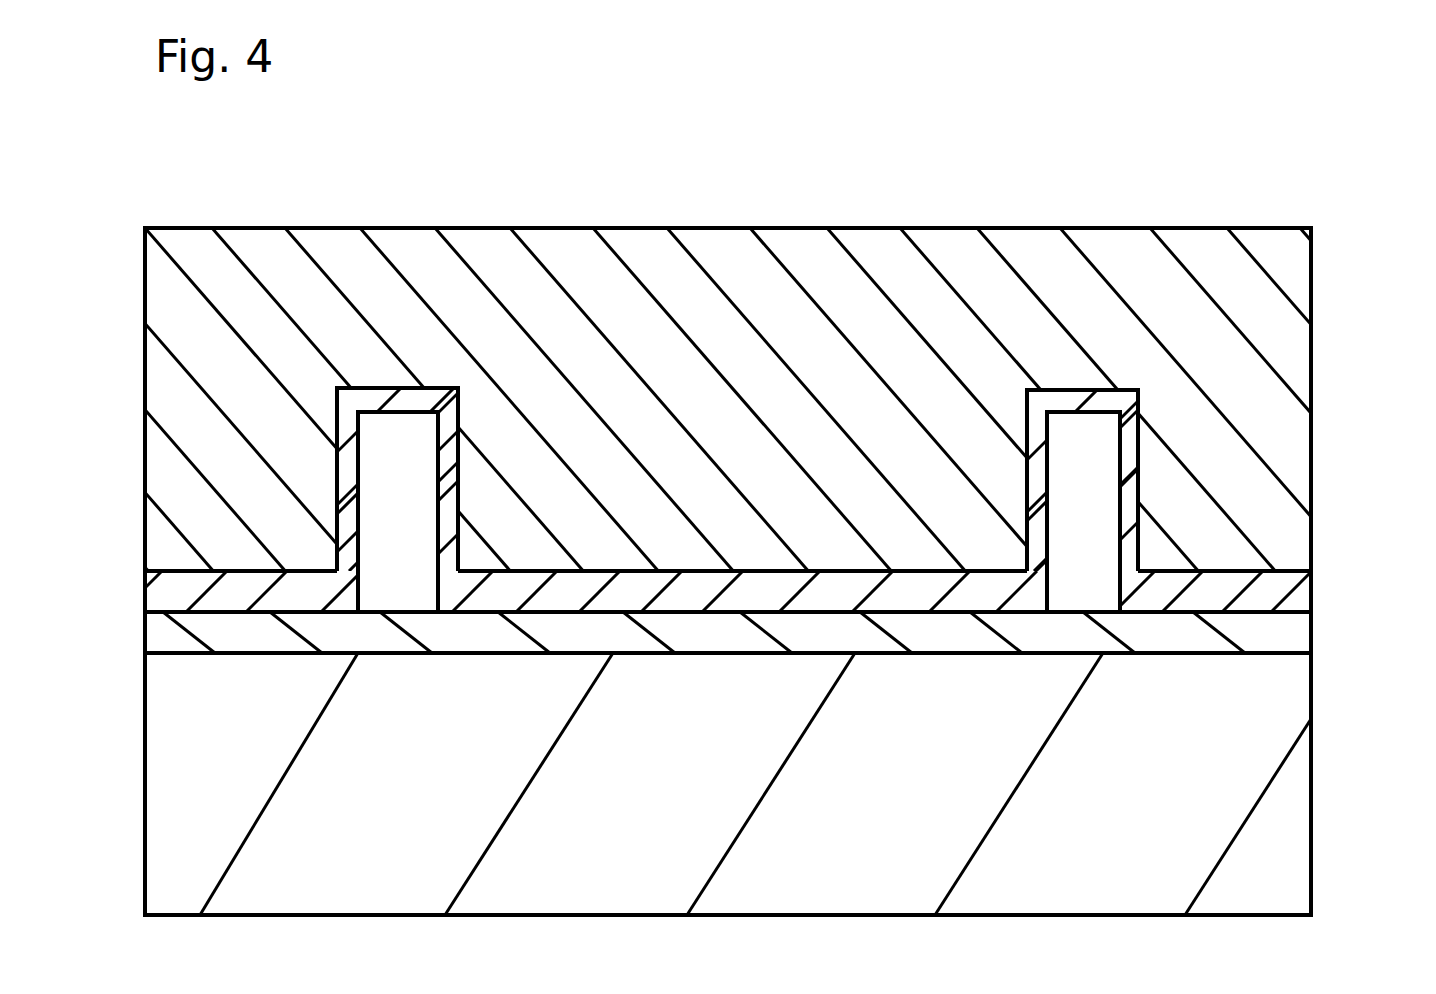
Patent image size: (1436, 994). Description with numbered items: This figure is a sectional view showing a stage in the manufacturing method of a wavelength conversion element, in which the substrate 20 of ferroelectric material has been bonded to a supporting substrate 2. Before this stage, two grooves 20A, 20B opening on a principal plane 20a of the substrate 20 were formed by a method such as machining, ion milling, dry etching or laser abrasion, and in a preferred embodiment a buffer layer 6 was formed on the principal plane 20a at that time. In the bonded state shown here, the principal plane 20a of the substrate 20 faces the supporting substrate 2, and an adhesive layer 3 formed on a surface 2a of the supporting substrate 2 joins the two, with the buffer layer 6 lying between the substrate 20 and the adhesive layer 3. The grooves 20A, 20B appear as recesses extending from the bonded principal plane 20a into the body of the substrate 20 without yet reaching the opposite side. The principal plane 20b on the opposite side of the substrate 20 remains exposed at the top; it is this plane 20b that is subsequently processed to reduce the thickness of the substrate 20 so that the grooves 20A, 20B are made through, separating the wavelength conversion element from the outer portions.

The supporting substrate 2 is at (1311, 722).
The surface of the supporting substrate 2a is at (1288, 653).
The adhesive layer 3 is at (1292, 627).
The buffer layer 6 is at (237, 592).
The substrate 20 is at (1312, 363).
The principal plane 20a is at (945, 573).
The principal plane on the opposite side 20b is at (840, 228).
The groove 20A is at (343, 472).
The groove 20B is at (1032, 476).